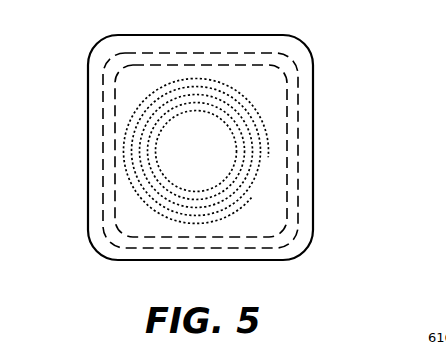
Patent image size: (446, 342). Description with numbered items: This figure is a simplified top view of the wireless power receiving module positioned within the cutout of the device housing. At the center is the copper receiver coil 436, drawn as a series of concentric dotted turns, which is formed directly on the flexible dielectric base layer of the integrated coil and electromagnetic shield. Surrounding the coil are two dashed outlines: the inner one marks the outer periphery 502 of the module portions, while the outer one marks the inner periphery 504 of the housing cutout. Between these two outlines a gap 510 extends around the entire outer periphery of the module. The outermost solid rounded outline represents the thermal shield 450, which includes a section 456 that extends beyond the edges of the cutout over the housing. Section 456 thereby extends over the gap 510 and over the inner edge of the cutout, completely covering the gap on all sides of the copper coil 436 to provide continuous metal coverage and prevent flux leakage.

The thermal shield 450 is at (300, 47).
The copper receiver coil 436 is at (148, 100).
The gap 510 is at (250, 98).
The outer periphery 502 is at (289, 150).
The inner periphery 504 is at (262, 205).
The section 456 is at (313, 205).